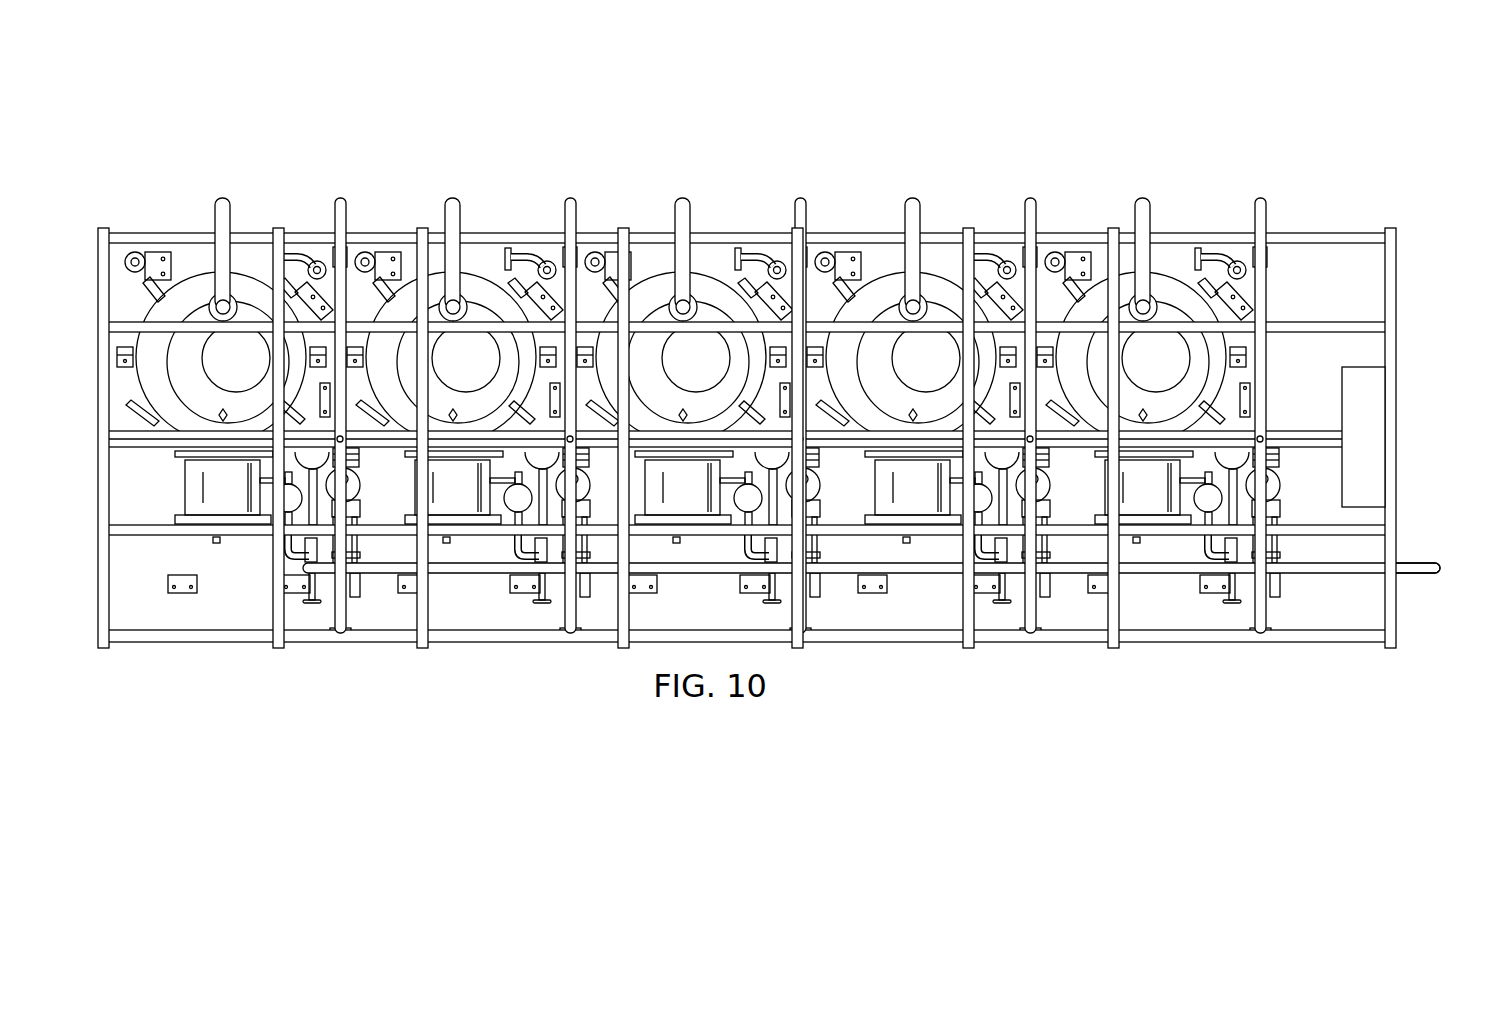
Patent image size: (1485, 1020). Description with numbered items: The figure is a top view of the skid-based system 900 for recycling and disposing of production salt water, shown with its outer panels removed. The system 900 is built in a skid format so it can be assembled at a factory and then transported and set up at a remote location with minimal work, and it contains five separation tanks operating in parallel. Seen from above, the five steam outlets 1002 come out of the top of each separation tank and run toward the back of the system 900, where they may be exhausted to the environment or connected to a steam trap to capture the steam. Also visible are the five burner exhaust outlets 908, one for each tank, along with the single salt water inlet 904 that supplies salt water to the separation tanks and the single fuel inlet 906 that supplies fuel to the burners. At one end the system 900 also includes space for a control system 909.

The system 900 is at (782, 351).
The salt water inlet 904 is at (1420, 575).
The fuel inlet 906 is at (1429, 562).
The burner exhaust outlets 908 is at (681, 357).
The control system 909 is at (1363, 367).
The steam outlets 1002 is at (686, 233).